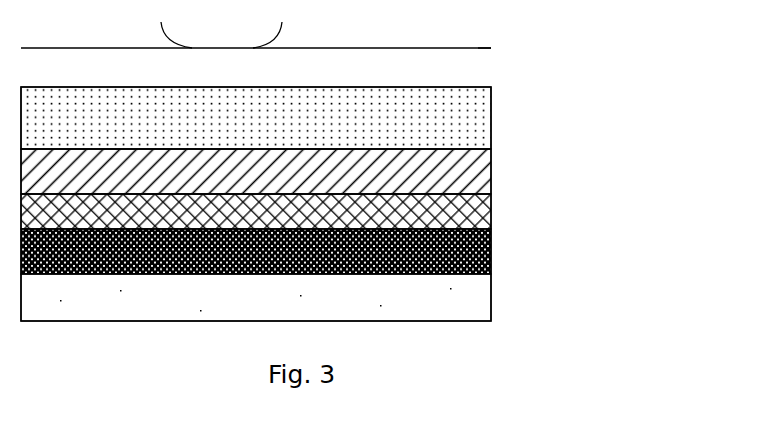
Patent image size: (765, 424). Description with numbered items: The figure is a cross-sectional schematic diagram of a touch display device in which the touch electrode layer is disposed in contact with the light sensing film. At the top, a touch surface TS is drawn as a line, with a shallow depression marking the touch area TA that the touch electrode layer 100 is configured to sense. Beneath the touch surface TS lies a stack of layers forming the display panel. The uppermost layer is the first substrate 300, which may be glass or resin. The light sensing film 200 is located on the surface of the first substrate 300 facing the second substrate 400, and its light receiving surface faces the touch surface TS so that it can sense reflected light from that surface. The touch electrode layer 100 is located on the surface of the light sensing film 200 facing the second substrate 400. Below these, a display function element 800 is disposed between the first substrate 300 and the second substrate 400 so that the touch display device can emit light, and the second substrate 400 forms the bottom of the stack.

The first substrate 300 is at (491, 135).
The light sensing film 200 is at (491, 175).
The touch electrode layer 100 is at (491, 212).
The display function element 800 is at (491, 254).
The second substrate 400 is at (491, 301).
The touch area TA is at (221, 35).
The touch surface TS is at (482, 48).